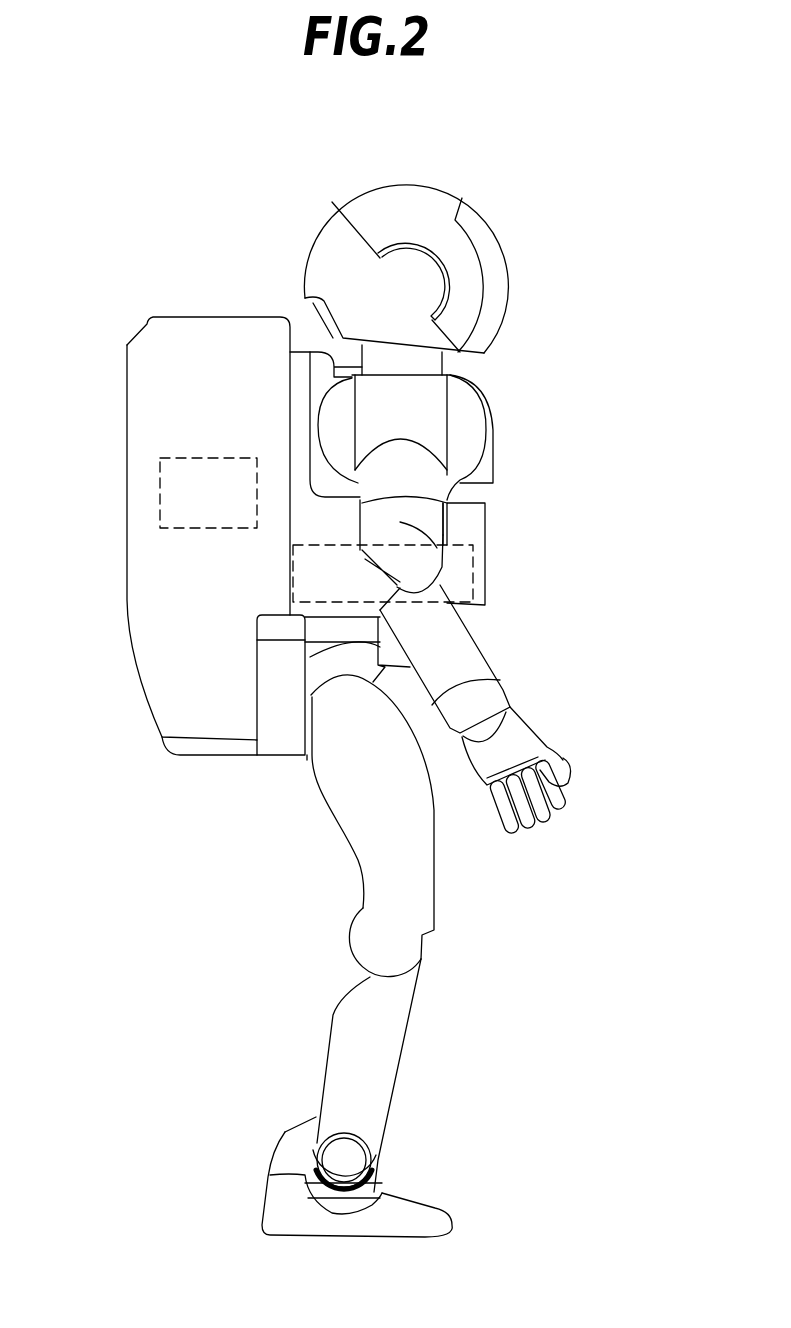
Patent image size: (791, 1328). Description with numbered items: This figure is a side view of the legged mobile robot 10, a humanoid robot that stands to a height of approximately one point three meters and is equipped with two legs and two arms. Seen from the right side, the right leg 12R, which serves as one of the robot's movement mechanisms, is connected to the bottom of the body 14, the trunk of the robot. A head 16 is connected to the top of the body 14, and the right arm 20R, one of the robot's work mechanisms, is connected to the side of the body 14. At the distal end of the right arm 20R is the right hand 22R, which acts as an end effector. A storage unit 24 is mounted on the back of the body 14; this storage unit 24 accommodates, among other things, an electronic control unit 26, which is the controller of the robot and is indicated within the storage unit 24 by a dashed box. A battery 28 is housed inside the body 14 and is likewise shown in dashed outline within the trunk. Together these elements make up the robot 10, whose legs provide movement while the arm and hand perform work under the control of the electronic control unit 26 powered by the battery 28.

The legged mobile robot 10 is at (510, 405).
The right leg 12R is at (462, 977).
The body 14 is at (473, 512).
The head 16 is at (377, 181).
The right arm 20R is at (518, 655).
The right hand 22R is at (525, 738).
The storage unit 24 is at (193, 313).
The electronic control unit 26 is at (160, 490).
The battery 28 is at (305, 542).